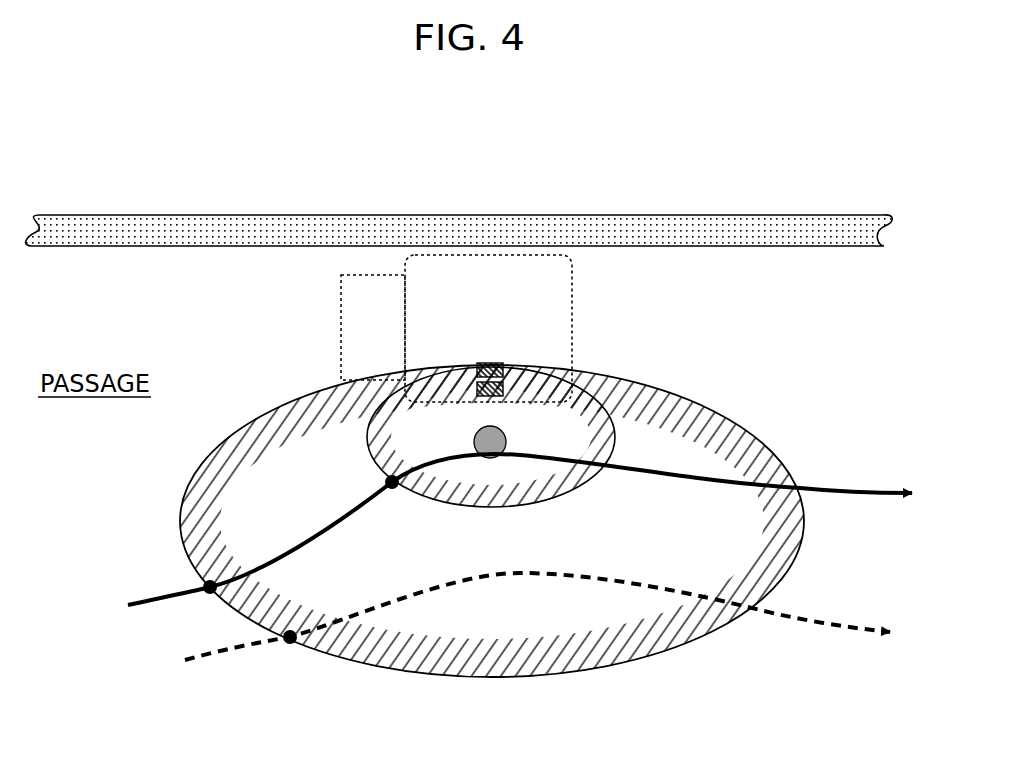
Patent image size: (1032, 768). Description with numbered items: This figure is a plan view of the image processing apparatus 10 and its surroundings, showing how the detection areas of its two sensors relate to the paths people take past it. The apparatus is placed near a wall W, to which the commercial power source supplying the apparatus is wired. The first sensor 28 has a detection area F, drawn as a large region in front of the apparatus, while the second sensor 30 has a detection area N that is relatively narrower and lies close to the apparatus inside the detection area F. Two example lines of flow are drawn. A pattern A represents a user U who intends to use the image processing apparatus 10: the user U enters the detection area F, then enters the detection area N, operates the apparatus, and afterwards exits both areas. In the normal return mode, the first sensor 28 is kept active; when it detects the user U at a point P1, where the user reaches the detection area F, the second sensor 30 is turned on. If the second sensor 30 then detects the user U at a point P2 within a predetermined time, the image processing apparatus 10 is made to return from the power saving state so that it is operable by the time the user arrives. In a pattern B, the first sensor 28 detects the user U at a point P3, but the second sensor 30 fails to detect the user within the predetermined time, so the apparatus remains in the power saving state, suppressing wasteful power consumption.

The image processing apparatus 10 is at (577, 303).
The first sensor 28 is at (477, 370).
The second sensor 30 is at (503, 389).
The wall W is at (797, 246).
The detection area F is at (694, 385).
The detection area N is at (597, 407).
The user U is at (475, 434).
The pattern A is at (532, 529).
The pattern B is at (551, 616).
The point P1 is at (190, 579).
The point P2 is at (393, 500).
The point P3 is at (295, 654).